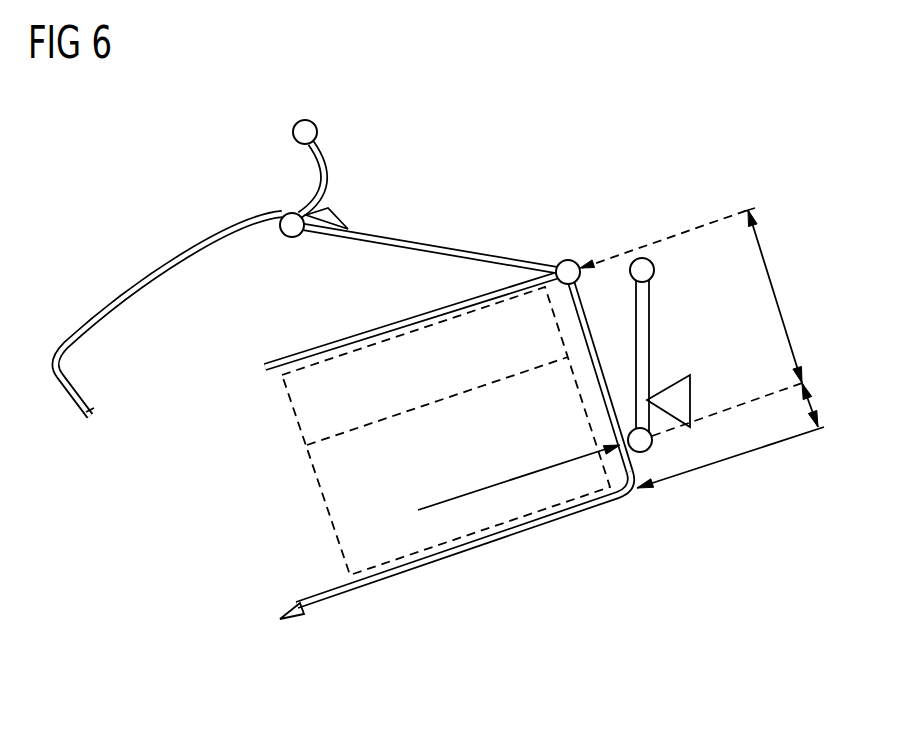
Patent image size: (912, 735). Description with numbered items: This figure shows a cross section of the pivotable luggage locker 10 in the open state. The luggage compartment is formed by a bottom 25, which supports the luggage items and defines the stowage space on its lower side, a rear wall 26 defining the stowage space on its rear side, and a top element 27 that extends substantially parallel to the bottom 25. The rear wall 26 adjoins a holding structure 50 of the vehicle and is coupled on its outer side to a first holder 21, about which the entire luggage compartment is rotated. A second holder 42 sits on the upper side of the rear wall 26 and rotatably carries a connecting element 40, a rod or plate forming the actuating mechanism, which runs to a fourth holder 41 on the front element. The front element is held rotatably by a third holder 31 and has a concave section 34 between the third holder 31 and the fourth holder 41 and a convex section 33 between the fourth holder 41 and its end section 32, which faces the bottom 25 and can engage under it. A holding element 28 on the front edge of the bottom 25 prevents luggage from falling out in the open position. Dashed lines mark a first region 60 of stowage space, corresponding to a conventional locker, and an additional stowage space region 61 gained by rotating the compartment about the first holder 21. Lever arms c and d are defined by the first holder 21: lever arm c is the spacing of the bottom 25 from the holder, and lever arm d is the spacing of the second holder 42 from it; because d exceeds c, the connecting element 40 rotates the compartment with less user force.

The pivotable luggage locker 10 is at (671, 157).
The first holder 21 is at (653, 447).
The bottom 25 is at (487, 543).
The rear wall 26 is at (594, 346).
The top element 27 is at (500, 286).
The holding element 28 is at (293, 614).
The third holder 31 is at (310, 124).
The end section 32 is at (73, 405).
The convex section 33 is at (147, 266).
The concave section 34 is at (330, 166).
The connecting element 40 is at (456, 244).
The fourth holder 41 is at (286, 214).
The second holder 42 is at (569, 260).
The holding structure 50 is at (668, 308).
The first region 60 is at (322, 510).
The additional stowage space region 61 is at (292, 407).
The lever arm c is at (817, 401).
The lever arm d is at (778, 297).